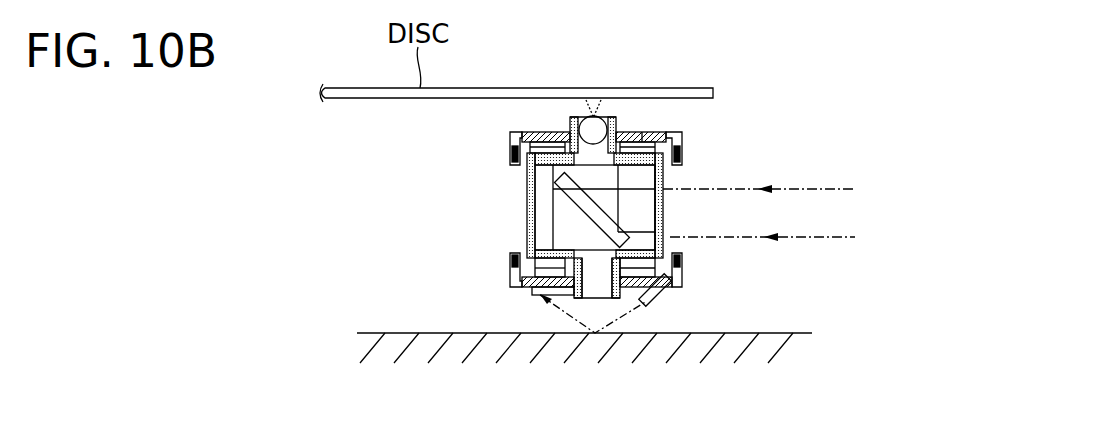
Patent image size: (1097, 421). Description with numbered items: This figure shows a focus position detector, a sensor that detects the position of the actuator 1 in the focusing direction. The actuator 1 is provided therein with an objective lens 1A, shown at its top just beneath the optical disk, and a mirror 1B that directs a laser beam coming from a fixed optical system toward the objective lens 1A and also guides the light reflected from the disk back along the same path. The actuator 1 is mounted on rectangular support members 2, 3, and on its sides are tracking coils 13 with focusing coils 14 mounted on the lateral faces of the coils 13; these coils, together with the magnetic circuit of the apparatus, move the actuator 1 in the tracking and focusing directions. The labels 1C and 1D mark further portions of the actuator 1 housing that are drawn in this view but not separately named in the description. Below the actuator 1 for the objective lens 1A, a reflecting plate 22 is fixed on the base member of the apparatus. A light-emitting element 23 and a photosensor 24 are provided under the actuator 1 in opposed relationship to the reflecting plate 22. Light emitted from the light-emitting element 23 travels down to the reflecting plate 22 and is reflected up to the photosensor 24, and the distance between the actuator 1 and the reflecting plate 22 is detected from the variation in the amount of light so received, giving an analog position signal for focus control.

The actuator 1 is at (496, 209).
The objective lens 1A is at (578, 113).
The mirror 1B is at (535, 197).
The tracking coil 1C is at (663, 171).
The holder side wall 1D is at (664, 209).
The support member 2 is at (686, 134).
The support member 3 is at (683, 258).
The tracking coil 13 is at (535, 255).
The focusing coil 14 is at (520, 270).
The reflecting plate 22 is at (406, 333).
The light-emitting element 23 is at (666, 296).
The photosensor 24 is at (530, 294).